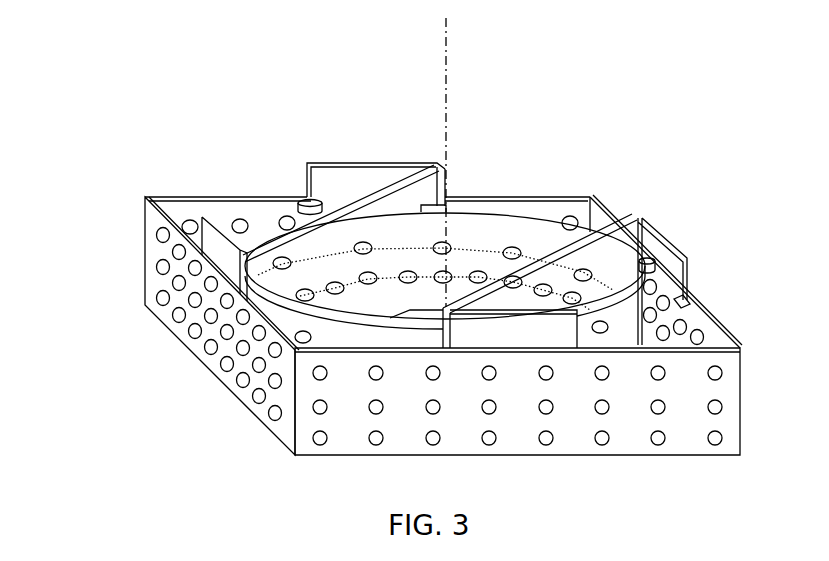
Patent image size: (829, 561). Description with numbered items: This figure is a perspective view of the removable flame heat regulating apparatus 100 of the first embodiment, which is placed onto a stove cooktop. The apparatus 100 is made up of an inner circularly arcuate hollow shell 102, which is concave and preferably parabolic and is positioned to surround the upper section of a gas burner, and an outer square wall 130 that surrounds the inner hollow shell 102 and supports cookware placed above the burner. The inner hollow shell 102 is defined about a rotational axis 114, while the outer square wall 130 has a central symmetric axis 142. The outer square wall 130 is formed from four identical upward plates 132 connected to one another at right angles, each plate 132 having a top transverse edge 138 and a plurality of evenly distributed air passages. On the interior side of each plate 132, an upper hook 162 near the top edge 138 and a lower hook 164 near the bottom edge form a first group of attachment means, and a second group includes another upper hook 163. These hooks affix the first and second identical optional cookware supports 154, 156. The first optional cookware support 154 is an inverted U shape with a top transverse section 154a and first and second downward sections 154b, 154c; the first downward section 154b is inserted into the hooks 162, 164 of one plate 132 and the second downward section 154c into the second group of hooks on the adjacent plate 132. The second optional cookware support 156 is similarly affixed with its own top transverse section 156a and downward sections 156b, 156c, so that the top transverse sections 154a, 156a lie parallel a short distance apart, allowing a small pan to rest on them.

The removable flame heat regulating apparatus 100 is at (128, 189).
The inner circularly arcuate hollow shell 102 is at (517, 218).
The rotational axis 114 is at (447, 85).
The central symmetric axis 142 is at (447, 47).
The outer square wall 130 is at (223, 393).
The upward plate 132 is at (352, 434).
The top transverse edge 138 is at (216, 197).
The first optional cookware support 154 is at (313, 158).
The top transverse section 154a is at (342, 214).
The first downward section 154b is at (241, 300).
The second downward section 154c is at (446, 162).
The second optional cookware support 156 is at (627, 216).
The top transverse section 156a is at (612, 222).
The first downward section 156b is at (665, 205).
The second downward section 156c is at (448, 333).
The upper hook 162 is at (300, 203).
The upper hook 163 is at (447, 209).
The lower hook 164 is at (640, 341).